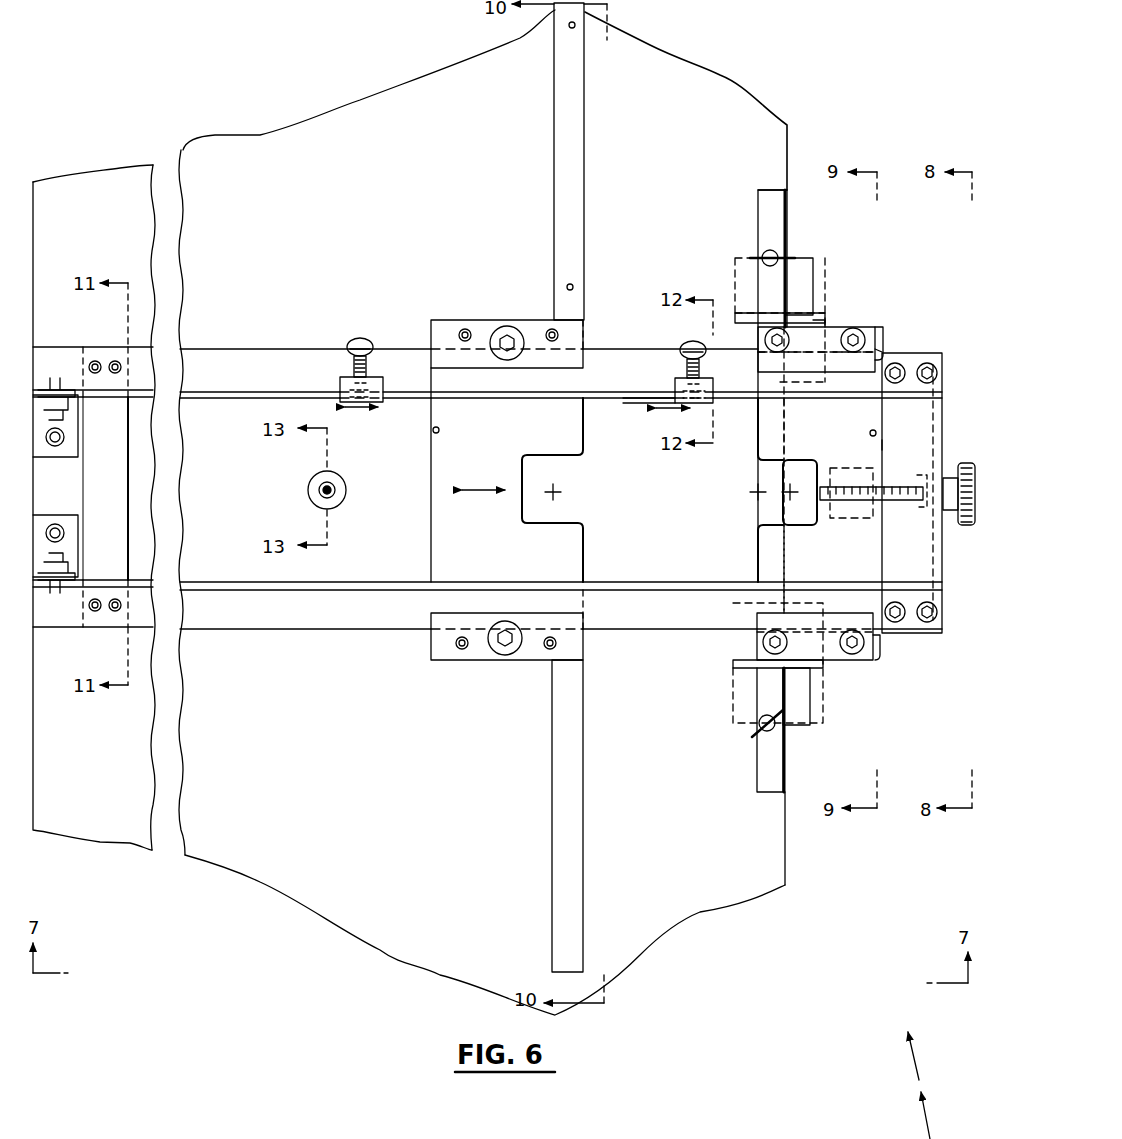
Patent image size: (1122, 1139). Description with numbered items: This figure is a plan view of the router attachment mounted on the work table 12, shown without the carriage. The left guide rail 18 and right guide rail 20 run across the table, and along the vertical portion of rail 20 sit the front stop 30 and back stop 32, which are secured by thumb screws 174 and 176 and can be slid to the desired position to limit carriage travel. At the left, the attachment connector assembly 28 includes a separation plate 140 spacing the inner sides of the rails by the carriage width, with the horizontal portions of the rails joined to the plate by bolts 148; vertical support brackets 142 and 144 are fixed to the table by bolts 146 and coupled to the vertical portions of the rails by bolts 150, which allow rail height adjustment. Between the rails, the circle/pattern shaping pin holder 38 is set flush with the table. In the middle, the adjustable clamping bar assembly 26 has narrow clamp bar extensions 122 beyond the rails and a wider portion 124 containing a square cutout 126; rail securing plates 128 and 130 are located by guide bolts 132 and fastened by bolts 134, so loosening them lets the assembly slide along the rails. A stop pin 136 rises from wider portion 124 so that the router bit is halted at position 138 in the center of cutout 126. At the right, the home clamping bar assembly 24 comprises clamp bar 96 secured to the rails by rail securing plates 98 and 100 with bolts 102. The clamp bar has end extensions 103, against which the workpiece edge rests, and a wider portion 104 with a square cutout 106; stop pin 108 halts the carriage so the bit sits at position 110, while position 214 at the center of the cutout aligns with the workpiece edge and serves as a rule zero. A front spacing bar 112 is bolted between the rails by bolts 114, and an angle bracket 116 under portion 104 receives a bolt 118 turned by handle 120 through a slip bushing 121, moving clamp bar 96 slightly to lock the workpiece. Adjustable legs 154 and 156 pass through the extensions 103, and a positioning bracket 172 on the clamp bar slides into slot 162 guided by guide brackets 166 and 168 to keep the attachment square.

The work table 12 is at (656, 68).
The left guide rail 18 is at (666, 616).
The right guide rail 20 is at (588, 362).
The home clamping bar assembly 24 is at (874, 325).
The adjustable clamping bar assembly 26 is at (586, 418).
The attachment connector assembly 28 is at (132, 440).
The front stop 30 is at (712, 384).
The back stop 32 is at (340, 384).
The circle/pattern shaping pin holder 38 is at (330, 474).
The clamp bar 96 is at (766, 186).
The rail securing plate 98 is at (864, 660).
The rail securing plate 100 is at (836, 328).
The bolts 102 is at (765, 340).
The end extensions 103 is at (760, 208).
The wider portion 104 is at (762, 456).
The square cutout 106 is at (764, 526).
The stop pin 108 is at (871, 430).
The position 110 is at (790, 480).
The front spacing bar 112 is at (882, 446).
The bolts 114 is at (927, 384).
The angle bracket 116 is at (838, 520).
The bolt 118 is at (890, 506).
The handle 120 is at (960, 468).
The slip bushing 121 is at (920, 482).
The narrow clamp bar extension 122 is at (578, 148).
The wider portion 124 is at (572, 554).
The square cutout portion 126 is at (560, 527).
The rail securing plate 128 is at (440, 658).
The rail securing plate 130 is at (438, 324).
The guide bolts 132 is at (550, 328).
The bolts 134 is at (507, 352).
The stop pin 136 is at (438, 428).
The position 138 is at (556, 488).
The separation plate 140 is at (120, 500).
The vertical support bracket 142 is at (72, 515).
The vertical support bracket 144 is at (72, 460).
The bolts 146 is at (64, 440).
The bolts 148 is at (116, 361).
The bolts 150 is at (58, 385).
The adjustable leg 154 is at (760, 728).
The adjustable leg 156 is at (764, 254).
The slot 162 is at (804, 668).
The guide bracket 166 is at (800, 725).
The guide bracket 168 is at (800, 272).
The positioning bracket 172 is at (818, 322).
The thumb screw 174 is at (694, 328).
The thumb screw 176 is at (360, 338).
The position 214 is at (752, 492).